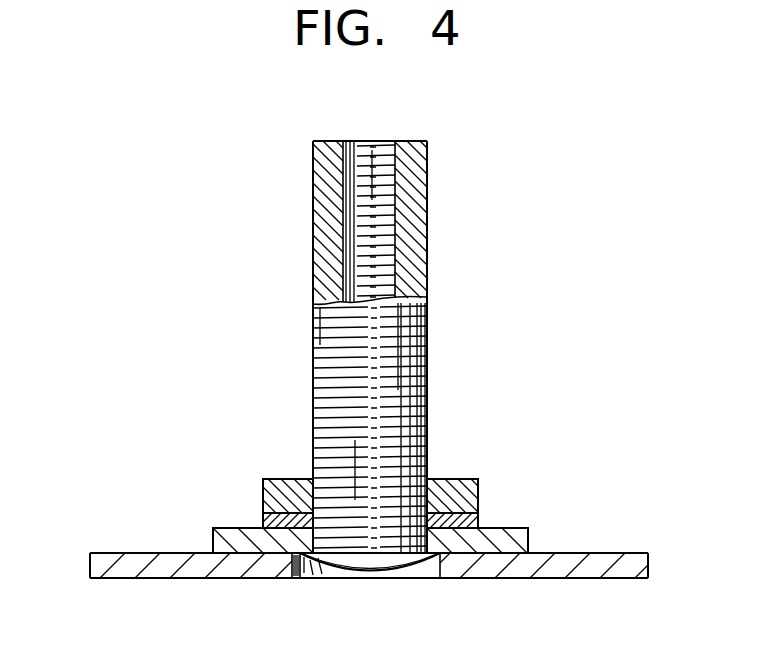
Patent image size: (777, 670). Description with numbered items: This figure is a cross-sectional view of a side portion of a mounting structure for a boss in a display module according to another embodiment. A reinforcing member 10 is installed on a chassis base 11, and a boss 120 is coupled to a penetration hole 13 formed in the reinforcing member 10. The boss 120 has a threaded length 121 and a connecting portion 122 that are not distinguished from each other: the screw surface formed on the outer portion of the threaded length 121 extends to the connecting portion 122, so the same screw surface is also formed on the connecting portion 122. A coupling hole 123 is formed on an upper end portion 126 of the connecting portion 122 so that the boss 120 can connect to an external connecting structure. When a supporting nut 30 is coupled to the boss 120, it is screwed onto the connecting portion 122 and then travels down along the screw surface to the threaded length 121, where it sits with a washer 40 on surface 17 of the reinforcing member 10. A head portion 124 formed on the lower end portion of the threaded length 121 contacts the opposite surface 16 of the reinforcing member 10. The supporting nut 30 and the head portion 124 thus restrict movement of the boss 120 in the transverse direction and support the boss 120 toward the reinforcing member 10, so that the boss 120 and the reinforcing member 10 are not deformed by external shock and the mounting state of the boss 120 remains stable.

The reinforcing member 10 is at (369, 553).
The chassis base 11 is at (369, 555).
The penetration hole 13 is at (328, 556).
The surface 16 is at (470, 557).
The surface 17 is at (500, 528).
The supporting nut 30 is at (475, 480).
The washer 40 is at (478, 522).
The boss 120 is at (384, 352).
The threaded length 121 is at (430, 472).
The connecting portion 122 is at (427, 327).
The coupling hole 123 is at (383, 140).
The head portion 124 is at (393, 569).
The upper end portion 126 is at (318, 195).